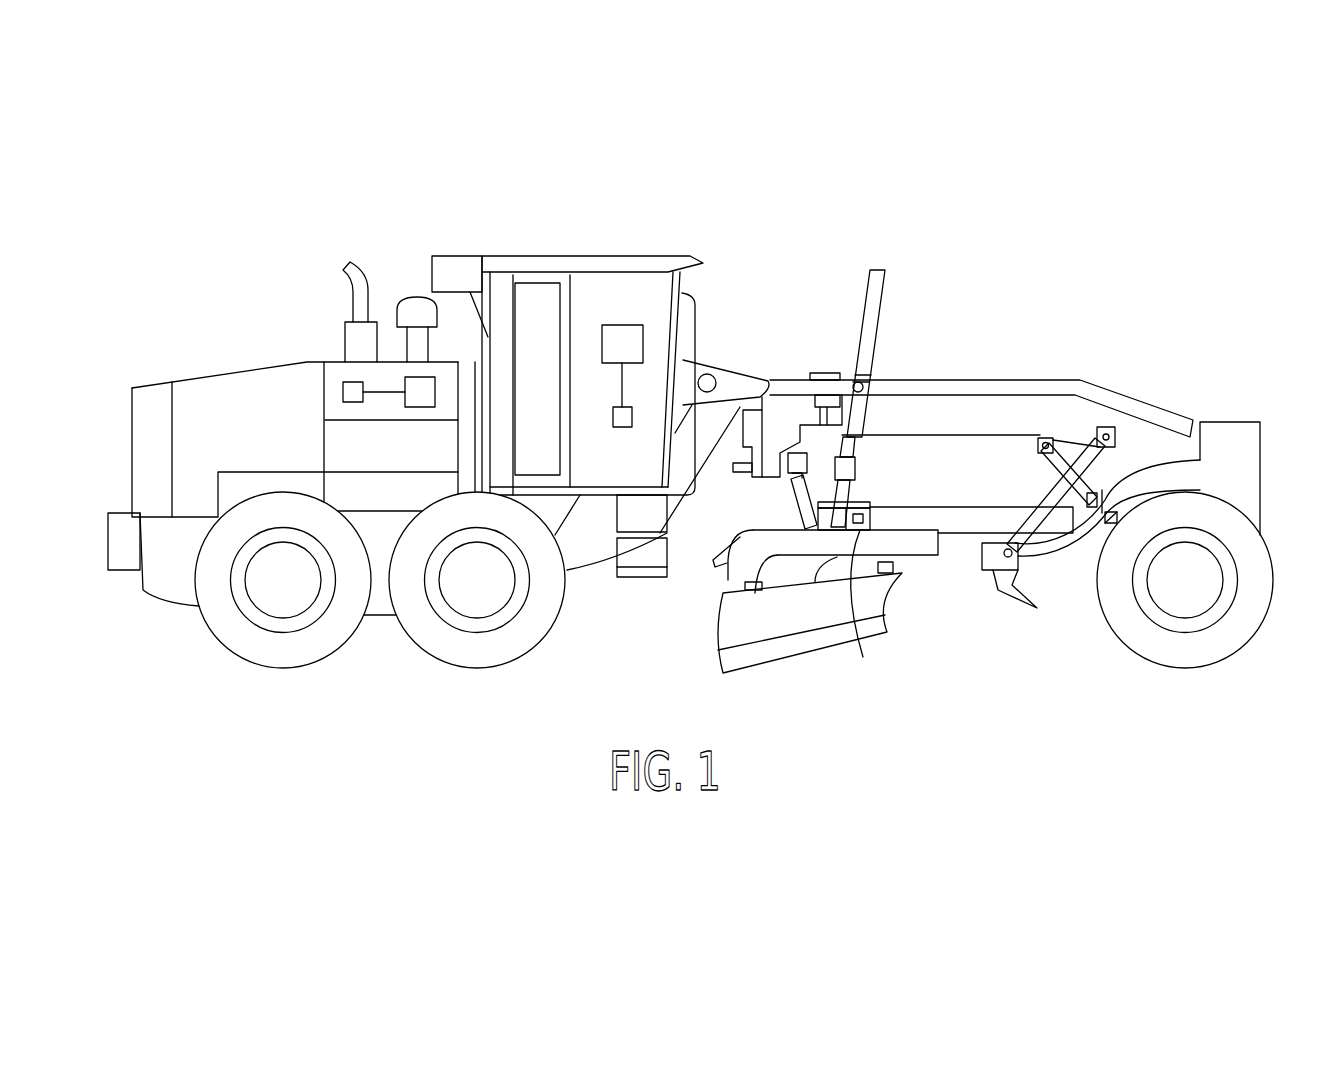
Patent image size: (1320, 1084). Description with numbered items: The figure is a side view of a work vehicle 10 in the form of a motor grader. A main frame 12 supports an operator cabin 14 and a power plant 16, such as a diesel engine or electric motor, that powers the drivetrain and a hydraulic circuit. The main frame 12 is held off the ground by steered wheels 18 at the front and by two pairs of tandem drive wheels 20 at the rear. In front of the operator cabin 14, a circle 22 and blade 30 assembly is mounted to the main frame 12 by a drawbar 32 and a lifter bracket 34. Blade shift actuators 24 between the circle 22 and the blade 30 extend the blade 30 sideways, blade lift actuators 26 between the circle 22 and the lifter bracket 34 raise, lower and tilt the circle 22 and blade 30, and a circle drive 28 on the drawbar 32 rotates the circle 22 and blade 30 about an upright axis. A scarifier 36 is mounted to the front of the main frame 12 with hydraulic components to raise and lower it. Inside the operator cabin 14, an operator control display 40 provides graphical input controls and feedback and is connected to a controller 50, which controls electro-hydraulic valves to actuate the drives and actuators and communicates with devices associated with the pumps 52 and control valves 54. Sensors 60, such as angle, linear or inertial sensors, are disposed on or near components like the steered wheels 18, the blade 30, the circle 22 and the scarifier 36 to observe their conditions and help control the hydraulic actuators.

The work vehicle 10 is at (707, 234).
The main frame 12 is at (993, 410).
The operator cabin 14 is at (540, 272).
The power plant 16 is at (223, 375).
The steered wheels 18 is at (1187, 595).
The tandem drive wheels 20 is at (287, 595).
The circle 22 is at (917, 550).
The blade shift actuators 24 is at (800, 493).
The blade lift actuators 26 is at (872, 313).
The circle drive 28 is at (857, 498).
The blade 30 is at (740, 658).
The drawbar 32 is at (963, 520).
The lifter bracket 34 is at (785, 410).
The scarifier 36 is at (1047, 558).
The operator control display 40 is at (620, 343).
The controller 50 is at (620, 415).
The pumps 52 is at (417, 393).
The control valves 54 is at (353, 393).
The sensors 60 is at (1127, 462).